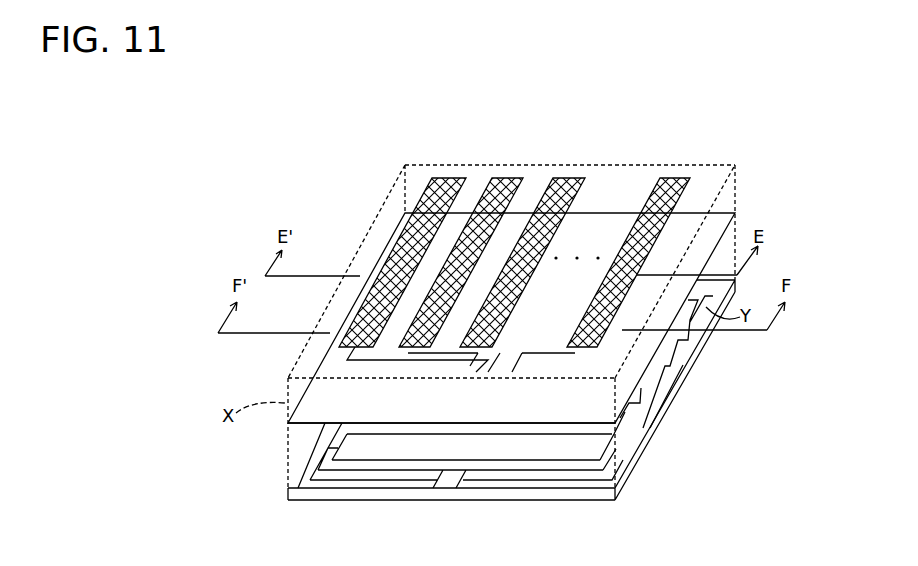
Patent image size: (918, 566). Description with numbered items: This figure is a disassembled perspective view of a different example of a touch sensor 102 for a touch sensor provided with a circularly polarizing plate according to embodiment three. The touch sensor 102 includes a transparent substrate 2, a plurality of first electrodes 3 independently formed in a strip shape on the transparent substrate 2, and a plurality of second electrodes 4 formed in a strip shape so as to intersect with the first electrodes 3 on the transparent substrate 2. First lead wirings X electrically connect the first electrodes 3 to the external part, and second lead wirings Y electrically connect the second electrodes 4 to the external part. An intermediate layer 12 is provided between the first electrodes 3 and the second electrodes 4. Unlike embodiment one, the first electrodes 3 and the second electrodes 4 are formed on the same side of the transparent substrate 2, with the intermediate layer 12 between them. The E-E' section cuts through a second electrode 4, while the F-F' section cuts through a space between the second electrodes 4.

The touch sensor 102 is at (358, 143).
The first electrode 3 is at (684, 172).
The second electrode 4 is at (673, 412).
The transparent substrate 2 is at (643, 468).
The intermediate layer 12 is at (285, 453).